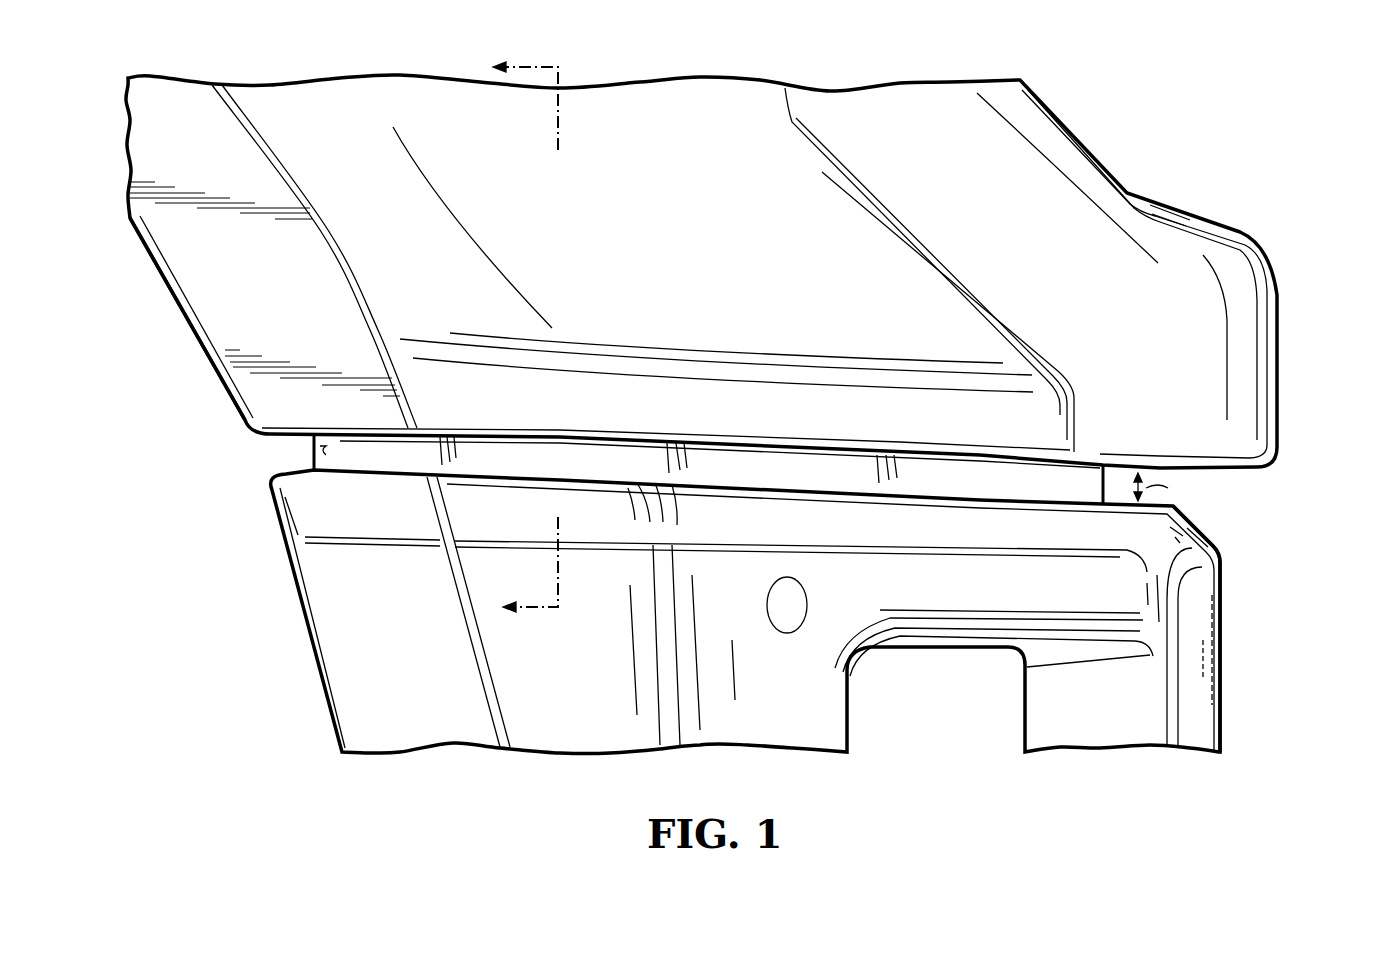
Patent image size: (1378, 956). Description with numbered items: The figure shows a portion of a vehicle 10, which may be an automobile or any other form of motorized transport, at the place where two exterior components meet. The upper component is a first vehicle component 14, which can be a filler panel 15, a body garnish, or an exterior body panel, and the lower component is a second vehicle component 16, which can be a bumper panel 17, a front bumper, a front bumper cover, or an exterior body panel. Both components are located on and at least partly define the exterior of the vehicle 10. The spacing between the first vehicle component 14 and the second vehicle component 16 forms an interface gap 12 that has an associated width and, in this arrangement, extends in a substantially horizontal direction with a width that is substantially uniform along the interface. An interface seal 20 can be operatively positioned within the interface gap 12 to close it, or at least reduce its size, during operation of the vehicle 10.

The vehicle 10 is at (237, 742).
The interface gap 12 is at (1243, 495).
The first vehicle component 14 is at (1105, 125).
The filler panel 15 is at (208, 288).
The second vehicle component 16 is at (1235, 664).
The bumper panel 17 is at (1192, 617).
The interface seal 20 is at (318, 455).